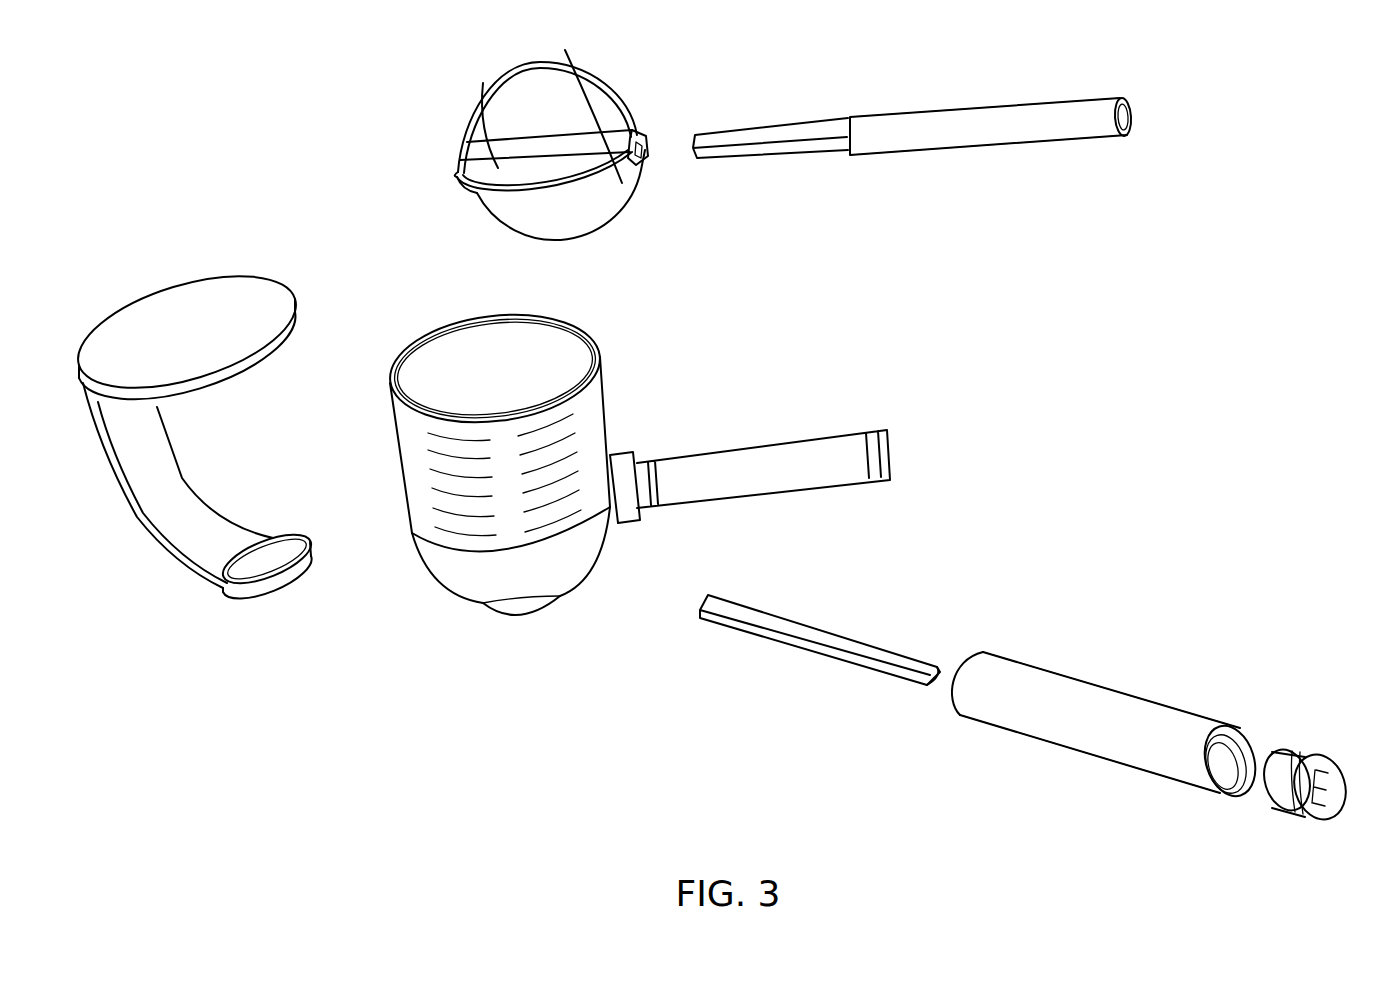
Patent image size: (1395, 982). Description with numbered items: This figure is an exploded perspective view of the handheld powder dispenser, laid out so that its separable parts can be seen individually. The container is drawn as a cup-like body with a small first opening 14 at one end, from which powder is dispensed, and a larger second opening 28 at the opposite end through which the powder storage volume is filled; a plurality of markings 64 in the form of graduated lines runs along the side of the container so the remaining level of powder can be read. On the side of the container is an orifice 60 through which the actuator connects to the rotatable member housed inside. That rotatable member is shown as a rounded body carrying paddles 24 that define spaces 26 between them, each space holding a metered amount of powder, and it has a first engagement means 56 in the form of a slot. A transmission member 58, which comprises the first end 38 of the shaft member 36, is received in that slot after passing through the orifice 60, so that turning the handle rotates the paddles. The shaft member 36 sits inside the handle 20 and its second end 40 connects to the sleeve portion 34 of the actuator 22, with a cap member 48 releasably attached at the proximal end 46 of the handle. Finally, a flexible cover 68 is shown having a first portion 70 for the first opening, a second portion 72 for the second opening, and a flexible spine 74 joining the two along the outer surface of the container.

The first opening 14 is at (495, 615).
The handle 20 is at (1185, 797).
The actuator 22 is at (1100, 722).
The paddles 24 is at (500, 108).
The spaces 26 is at (548, 92).
The second opening 28 is at (472, 383).
The sleeve portion 34 is at (1100, 722).
The shaft member 36 is at (920, 155).
The first end 38 is at (697, 136).
The second end 40 is at (925, 690).
The proximal end 46 is at (1255, 740).
The cap member 48 is at (1340, 780).
The first engagement means 56 is at (643, 140).
The transmission member 58 is at (870, 113).
The orifice 60 is at (625, 520).
The markings 64 is at (455, 540).
The cover 68 is at (103, 447).
The first portion 70 is at (225, 600).
The second portion 72 is at (150, 338).
The flexible spine 74 is at (140, 533).